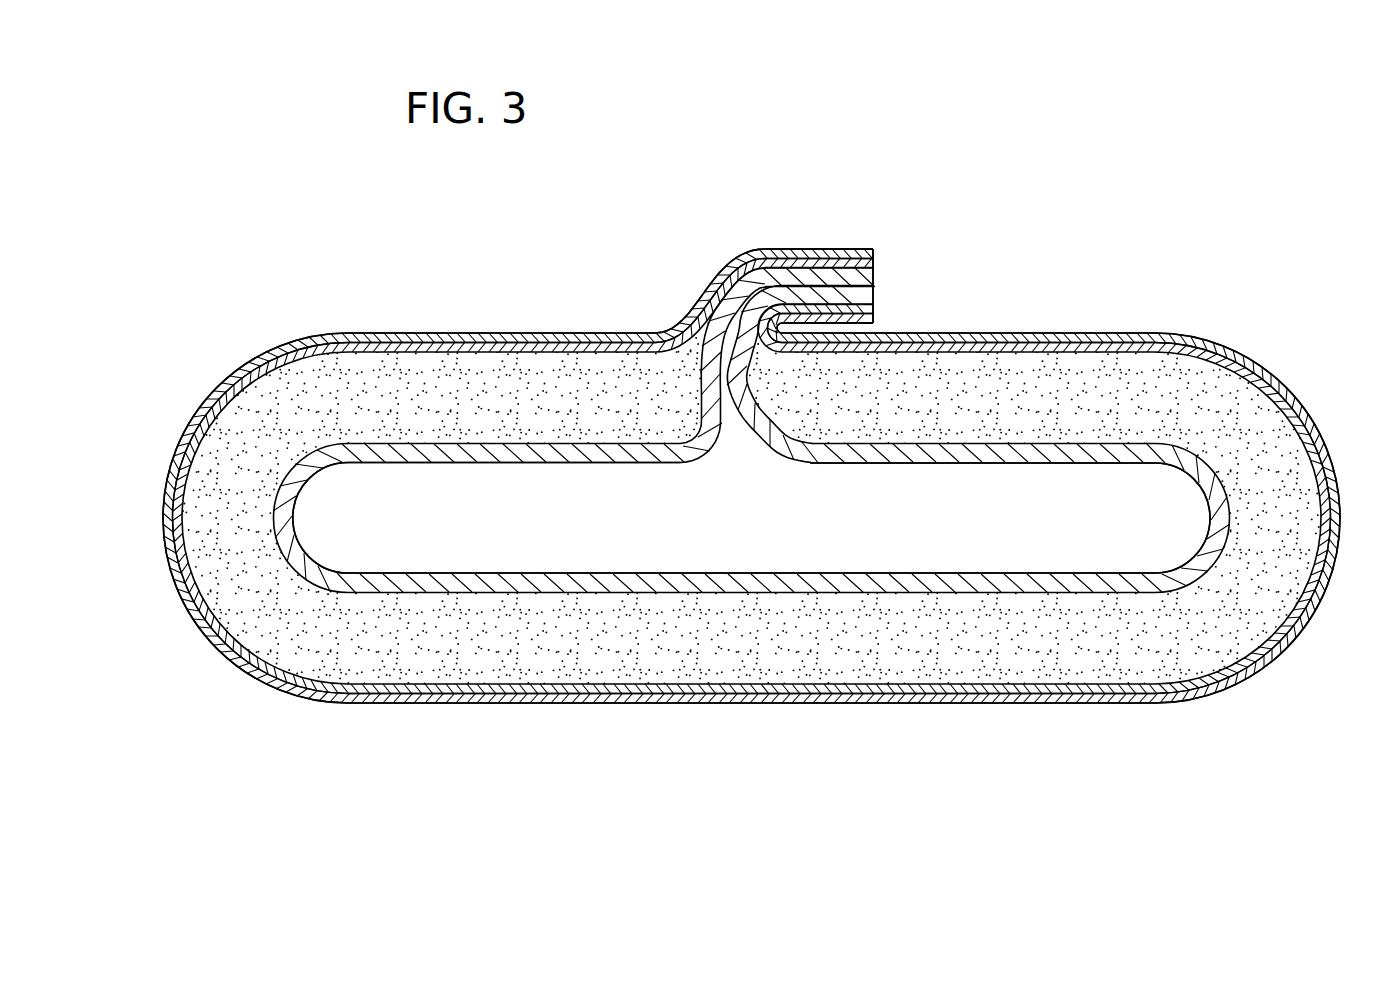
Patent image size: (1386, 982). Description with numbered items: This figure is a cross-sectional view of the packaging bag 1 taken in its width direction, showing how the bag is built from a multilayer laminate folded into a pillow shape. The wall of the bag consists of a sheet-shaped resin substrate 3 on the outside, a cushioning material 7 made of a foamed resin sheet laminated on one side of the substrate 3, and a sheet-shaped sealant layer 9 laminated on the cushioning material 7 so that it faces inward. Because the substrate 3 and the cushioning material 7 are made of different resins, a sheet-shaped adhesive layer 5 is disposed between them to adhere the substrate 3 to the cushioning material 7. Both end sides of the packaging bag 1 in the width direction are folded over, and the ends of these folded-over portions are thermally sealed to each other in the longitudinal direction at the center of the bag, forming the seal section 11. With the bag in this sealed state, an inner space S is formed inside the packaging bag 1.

The packaging bag 1 is at (1185, 207).
The substrate 3 is at (876, 252).
The adhesive layer 5 is at (876, 263).
The cushioning material 7 is at (1113, 397).
The sealant layer 9 is at (876, 276).
The seal section 11 is at (822, 243).
The inner space S is at (772, 533).